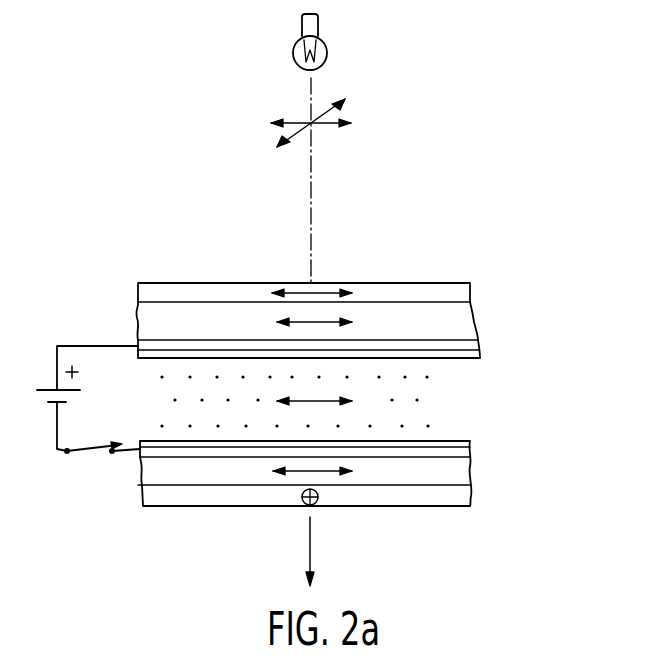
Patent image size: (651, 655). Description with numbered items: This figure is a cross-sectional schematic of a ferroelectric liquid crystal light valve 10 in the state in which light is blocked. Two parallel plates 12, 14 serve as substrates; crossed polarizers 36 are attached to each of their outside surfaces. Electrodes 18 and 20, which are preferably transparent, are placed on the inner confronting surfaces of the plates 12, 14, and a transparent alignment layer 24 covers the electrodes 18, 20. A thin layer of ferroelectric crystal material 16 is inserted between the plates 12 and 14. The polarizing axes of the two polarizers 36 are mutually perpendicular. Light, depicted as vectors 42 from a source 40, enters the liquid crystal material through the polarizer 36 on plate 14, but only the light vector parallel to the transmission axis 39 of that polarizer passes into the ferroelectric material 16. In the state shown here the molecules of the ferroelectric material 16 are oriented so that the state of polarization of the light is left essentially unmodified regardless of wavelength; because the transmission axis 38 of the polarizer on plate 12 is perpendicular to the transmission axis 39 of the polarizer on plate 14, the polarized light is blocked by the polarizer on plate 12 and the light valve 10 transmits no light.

The light valve 10 is at (462, 207).
The plate 12 is at (356, 501).
The plate 14 is at (378, 396).
The ferroelectric crystal material 16 is at (453, 402).
The electrode 18 is at (472, 449).
The electrode 20 is at (478, 348).
The transparent alignment layer 24 is at (480, 350).
The crossed polarizers 36 is at (472, 298).
The transmission axis 38 is at (317, 503).
The transmission axis 39 is at (319, 293).
The source 40 is at (328, 52).
The light vectors 42 is at (320, 128).